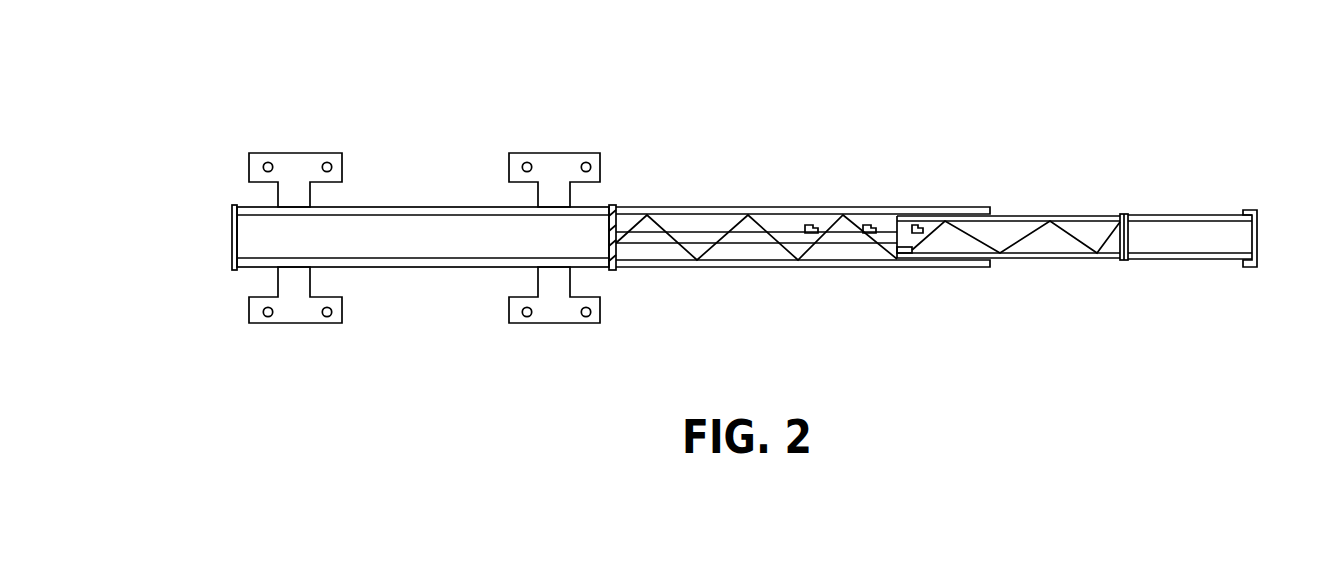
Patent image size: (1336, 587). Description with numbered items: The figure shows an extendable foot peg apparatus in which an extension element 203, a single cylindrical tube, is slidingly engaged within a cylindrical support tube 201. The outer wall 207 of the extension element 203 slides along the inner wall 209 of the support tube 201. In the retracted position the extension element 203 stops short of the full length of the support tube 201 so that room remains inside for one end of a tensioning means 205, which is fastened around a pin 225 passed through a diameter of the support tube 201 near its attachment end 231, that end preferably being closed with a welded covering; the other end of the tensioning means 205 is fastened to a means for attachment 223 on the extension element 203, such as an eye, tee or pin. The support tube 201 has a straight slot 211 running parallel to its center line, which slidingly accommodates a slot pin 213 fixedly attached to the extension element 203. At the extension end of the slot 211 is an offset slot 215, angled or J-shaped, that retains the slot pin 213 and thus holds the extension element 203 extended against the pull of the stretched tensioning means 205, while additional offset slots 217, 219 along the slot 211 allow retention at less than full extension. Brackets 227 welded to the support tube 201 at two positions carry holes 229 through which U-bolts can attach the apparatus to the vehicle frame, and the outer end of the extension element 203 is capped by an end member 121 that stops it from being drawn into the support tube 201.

The end cap 121 is at (1262, 262).
The support tube 201 is at (843, 268).
The extension element 203 is at (1167, 240).
The tensioning means 205 is at (1063, 220).
The outer wall 207 is at (1063, 262).
The inner wall 209 is at (752, 257).
The slot 211 is at (647, 238).
The slot pin 213 is at (912, 253).
The offset slot 215 is at (922, 226).
The offset slot 217 is at (868, 223).
The offset slot 219 is at (809, 224).
The means for attachment 223 is at (1124, 260).
The pin 225 is at (614, 217).
The brackets 227 is at (345, 139).
The holes 229 is at (325, 158).
The attachment end 231 is at (232, 237).